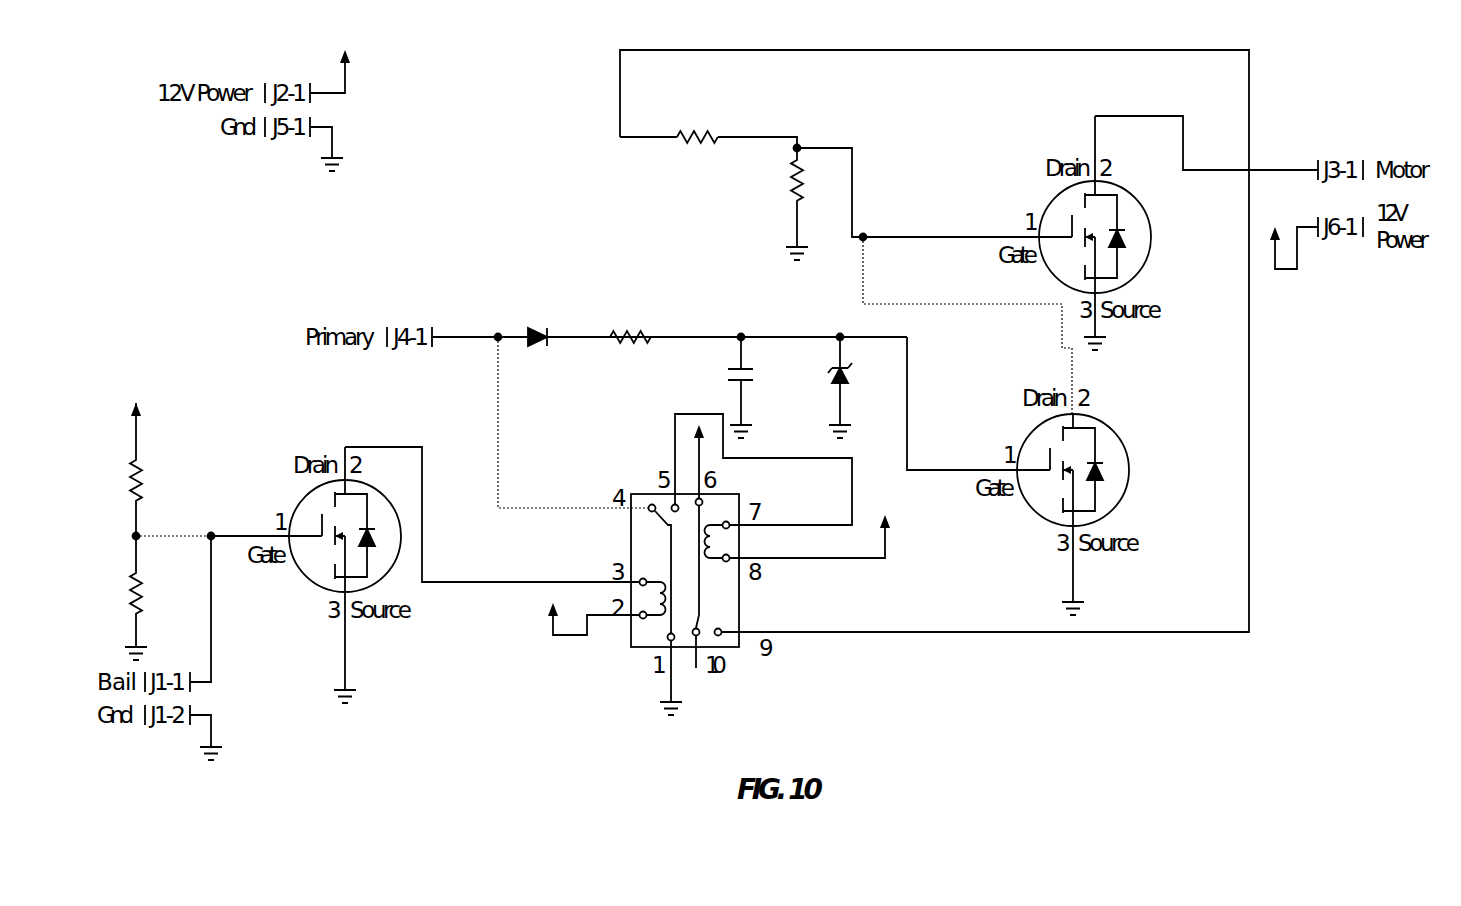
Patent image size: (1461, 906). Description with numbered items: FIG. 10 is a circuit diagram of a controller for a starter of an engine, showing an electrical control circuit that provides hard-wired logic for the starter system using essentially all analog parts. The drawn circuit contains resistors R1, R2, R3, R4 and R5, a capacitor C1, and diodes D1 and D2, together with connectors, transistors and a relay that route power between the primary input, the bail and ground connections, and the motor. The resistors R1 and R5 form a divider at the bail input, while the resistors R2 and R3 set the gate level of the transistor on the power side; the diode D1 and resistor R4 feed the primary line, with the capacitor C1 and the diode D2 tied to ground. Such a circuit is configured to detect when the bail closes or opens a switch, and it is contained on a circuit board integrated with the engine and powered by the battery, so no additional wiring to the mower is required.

The resistor R1 is at (123, 469).
The resistor R2 is at (700, 121).
The resistor R3 is at (803, 201).
The resistor R4 is at (634, 317).
The resistor R5 is at (125, 598).
The capacitor C1 is at (734, 387).
The diode D1 is at (538, 318).
The zener diode D2 is at (823, 387).